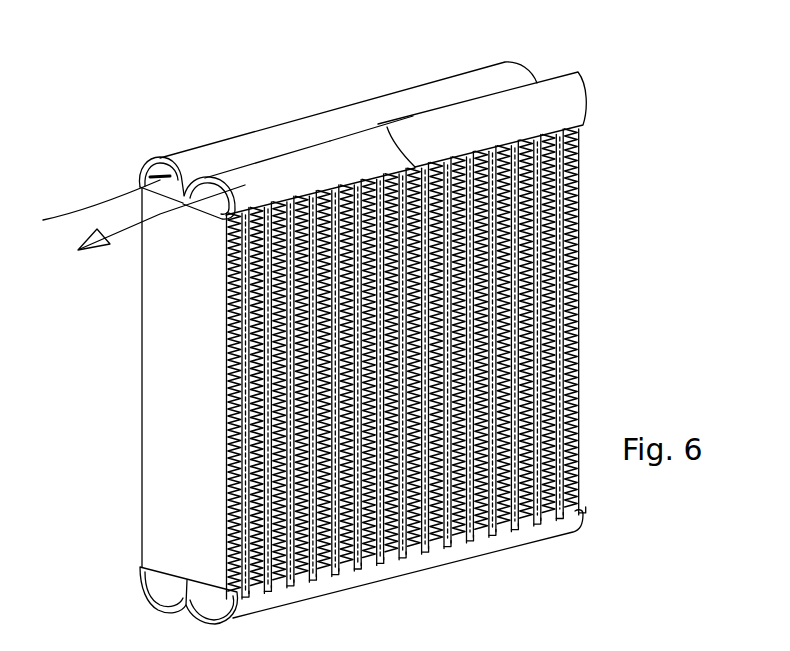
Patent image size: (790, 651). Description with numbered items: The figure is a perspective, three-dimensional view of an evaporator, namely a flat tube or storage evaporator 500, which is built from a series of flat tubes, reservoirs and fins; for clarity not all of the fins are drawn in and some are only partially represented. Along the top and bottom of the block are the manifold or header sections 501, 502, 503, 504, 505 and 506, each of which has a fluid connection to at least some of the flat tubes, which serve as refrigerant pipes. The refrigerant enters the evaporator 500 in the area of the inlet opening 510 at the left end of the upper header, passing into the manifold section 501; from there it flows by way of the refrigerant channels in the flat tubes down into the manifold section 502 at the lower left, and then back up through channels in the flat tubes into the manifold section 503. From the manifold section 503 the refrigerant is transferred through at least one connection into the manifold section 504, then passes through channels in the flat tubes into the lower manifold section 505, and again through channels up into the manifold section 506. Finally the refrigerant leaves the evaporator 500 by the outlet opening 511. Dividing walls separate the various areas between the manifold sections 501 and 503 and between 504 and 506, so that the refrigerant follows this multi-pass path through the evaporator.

The flat tube evaporator 500 is at (645, 156).
The manifold section 501 is at (250, 147).
The manifold section 502 is at (162, 585).
The manifold section 503 is at (448, 92).
The manifold section 504 is at (543, 107).
The manifold section 505 is at (412, 562).
The manifold section 506 is at (327, 177).
The inlet opening 510 is at (163, 177).
The outlet opening 511 is at (207, 206).